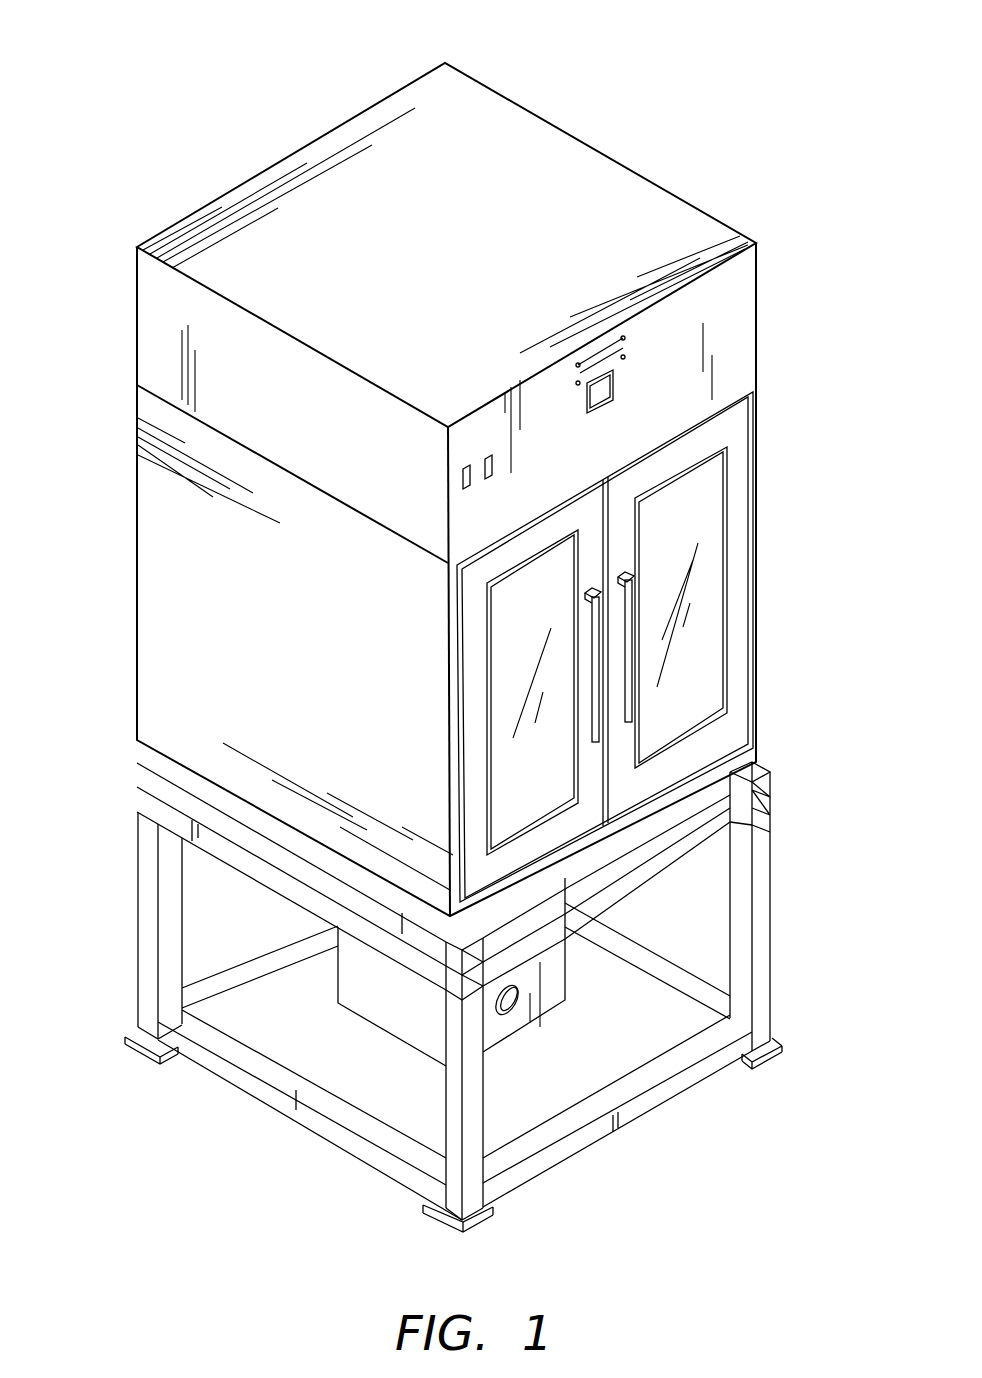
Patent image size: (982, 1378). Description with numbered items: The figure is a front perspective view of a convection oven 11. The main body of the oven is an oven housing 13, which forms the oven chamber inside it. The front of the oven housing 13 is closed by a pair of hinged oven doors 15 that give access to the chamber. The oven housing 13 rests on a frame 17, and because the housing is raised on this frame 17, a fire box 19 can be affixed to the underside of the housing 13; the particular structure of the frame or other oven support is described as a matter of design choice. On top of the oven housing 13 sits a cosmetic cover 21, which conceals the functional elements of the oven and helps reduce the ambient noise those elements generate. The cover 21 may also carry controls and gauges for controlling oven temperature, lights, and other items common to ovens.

The convection oven 11 is at (441, 620).
The oven housing 13 is at (168, 551).
The hinged oven doors 15 is at (708, 627).
The frame 17 is at (146, 860).
The fire box 19 is at (553, 994).
The cosmetic cover 21 is at (265, 108).